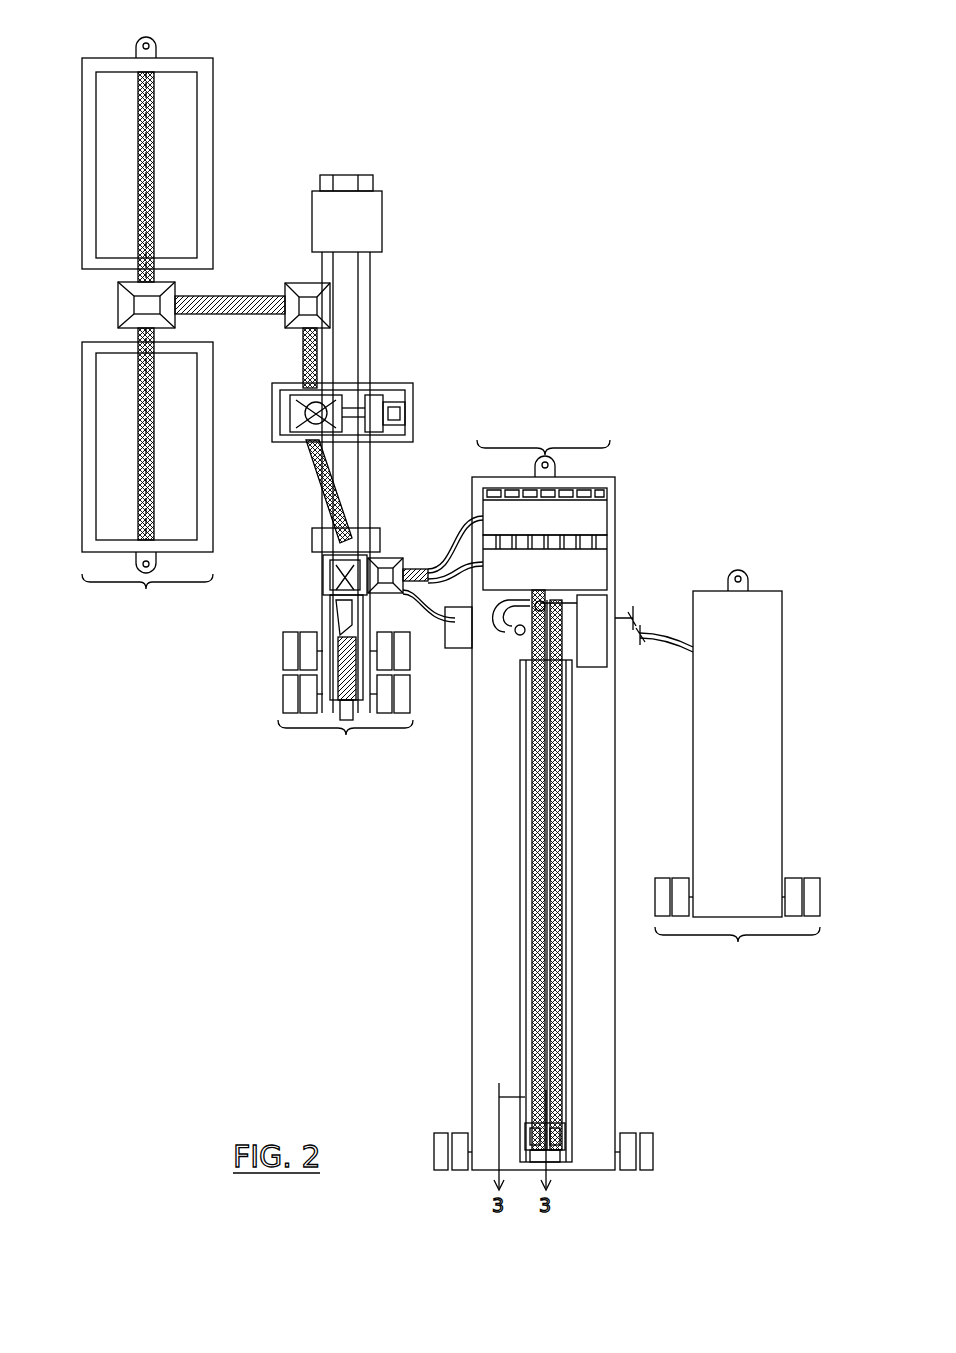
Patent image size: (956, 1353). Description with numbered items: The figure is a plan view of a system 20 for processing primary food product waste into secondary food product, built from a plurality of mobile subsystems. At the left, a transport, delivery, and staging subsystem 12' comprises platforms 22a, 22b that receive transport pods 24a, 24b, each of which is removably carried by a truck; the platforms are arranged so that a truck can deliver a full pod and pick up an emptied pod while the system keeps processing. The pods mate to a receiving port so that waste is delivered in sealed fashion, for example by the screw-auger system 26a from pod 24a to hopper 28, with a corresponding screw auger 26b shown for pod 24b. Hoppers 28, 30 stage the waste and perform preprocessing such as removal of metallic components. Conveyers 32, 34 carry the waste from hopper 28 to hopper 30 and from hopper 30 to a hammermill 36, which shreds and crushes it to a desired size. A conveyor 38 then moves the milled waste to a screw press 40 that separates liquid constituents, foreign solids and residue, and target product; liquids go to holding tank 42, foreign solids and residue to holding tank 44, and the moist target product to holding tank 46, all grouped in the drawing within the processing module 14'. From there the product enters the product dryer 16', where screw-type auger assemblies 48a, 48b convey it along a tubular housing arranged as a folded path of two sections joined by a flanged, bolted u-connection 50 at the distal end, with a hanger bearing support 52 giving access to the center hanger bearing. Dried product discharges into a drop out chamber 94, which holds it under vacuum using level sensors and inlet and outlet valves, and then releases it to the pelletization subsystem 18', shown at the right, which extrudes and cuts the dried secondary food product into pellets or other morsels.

The system 20 is at (578, 114).
The platform 22a is at (82, 170).
The platform 22b is at (82, 435).
The transport pod 24a is at (178, 105).
The transport pod 24b is at (178, 447).
The screw-auger system 26a is at (155, 160).
The second auger 26b is at (155, 503).
The hopper 28 is at (118, 305).
The hopper 30 is at (303, 283).
The conveyer 32 is at (232, 315).
The conveyer 34 is at (305, 345).
The hammermill 36 is at (392, 383).
The conveyor 38 is at (326, 492).
The screw press 40 is at (323, 582).
The holding tank 42 is at (593, 515).
The holding tank 44 is at (456, 648).
The holding tank 46 is at (593, 565).
The screw-type auger assembly 48a is at (535, 925).
The screw-type auger assembly 48b is at (550, 980).
The u-connection 50 is at (562, 1130).
The hanger bearing support 52 is at (552, 1152).
The drop out chamber 94 is at (602, 644).
The transport, delivery, and staging subsystem 12' is at (147, 593).
The drive module 14' is at (345, 676).
The product dryer 16' is at (543, 793).
The pelletization subsystem 18' is at (737, 767).